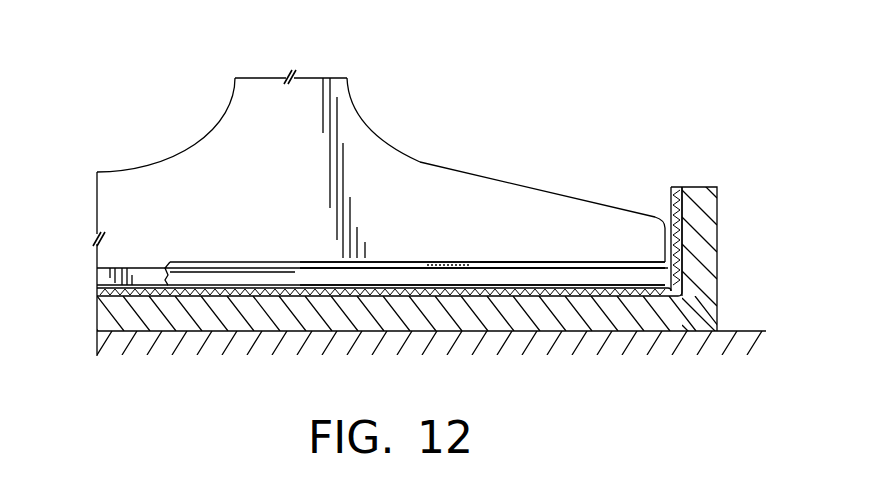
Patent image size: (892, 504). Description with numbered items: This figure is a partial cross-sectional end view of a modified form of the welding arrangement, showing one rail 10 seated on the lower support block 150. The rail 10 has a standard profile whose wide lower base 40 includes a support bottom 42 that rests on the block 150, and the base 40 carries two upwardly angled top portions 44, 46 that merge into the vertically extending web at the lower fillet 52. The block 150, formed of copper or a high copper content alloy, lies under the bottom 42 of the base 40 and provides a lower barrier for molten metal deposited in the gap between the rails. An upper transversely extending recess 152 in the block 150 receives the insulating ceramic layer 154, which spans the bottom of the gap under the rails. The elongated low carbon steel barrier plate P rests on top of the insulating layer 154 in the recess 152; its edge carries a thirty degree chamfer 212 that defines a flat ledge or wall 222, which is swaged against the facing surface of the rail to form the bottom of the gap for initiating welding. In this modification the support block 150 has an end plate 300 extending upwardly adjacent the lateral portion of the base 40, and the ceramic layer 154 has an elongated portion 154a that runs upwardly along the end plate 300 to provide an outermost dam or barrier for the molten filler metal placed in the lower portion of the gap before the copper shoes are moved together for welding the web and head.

The rail 10 is at (331, 67).
The lower base 40 is at (182, 180).
The upwardly angled top portion 46 is at (115, 167).
The lower fillet 52 is at (353, 103).
The upwardly angled top portion 44 is at (512, 178).
The upper transversely extending recess 152 is at (243, 286).
The flat ledge or wall 222 is at (572, 263).
The chamfer 212 is at (505, 277).
The barrier plate P is at (417, 258).
The support bottom 42 is at (138, 268).
The ceramic layer 154 is at (402, 287).
The elongated portion 154a is at (677, 188).
The end plate 300 is at (707, 218).
The lower block 150 is at (664, 322).